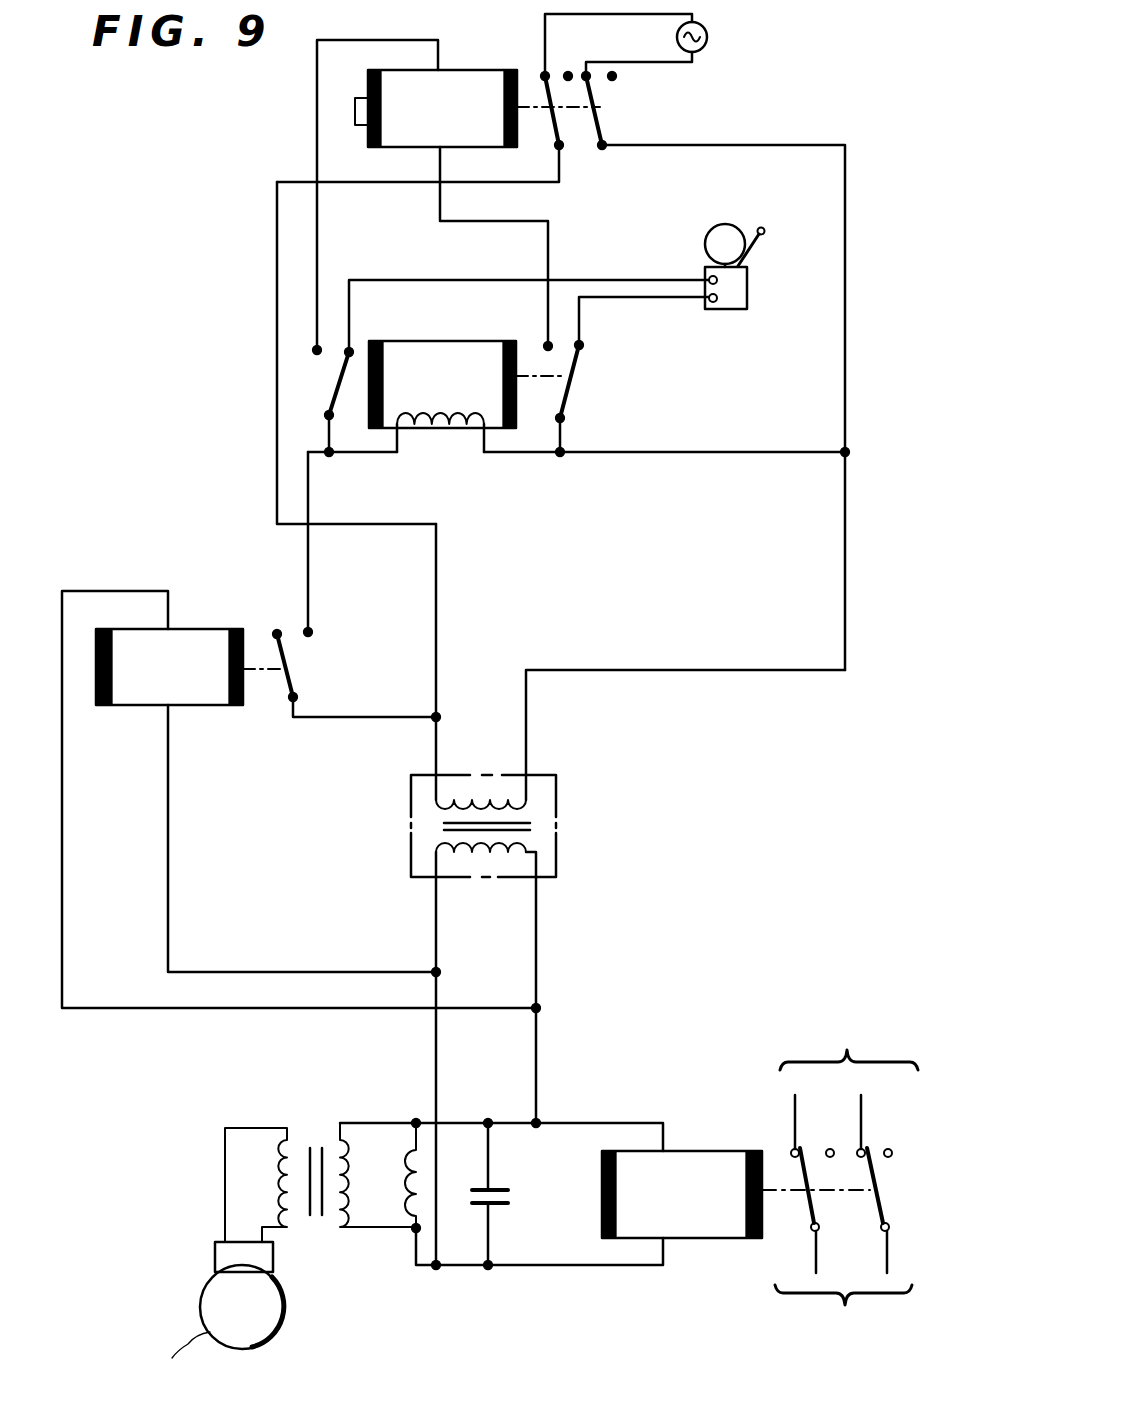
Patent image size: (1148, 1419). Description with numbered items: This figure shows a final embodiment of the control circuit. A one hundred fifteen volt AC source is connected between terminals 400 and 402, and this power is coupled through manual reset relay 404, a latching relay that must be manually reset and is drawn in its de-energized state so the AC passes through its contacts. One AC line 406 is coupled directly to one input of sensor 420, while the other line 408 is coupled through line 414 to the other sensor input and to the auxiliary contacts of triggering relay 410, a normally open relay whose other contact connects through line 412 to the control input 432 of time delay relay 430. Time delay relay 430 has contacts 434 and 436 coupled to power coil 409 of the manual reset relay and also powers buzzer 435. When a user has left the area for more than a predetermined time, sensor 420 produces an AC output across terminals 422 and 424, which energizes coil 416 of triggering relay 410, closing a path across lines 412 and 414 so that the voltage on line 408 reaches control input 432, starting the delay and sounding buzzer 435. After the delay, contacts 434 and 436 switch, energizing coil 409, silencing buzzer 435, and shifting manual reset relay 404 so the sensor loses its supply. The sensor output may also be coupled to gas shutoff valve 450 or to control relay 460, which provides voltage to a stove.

The terminal 400 is at (697, 14).
The terminal 402 is at (695, 62).
The manual reset relay 404 is at (488, 50).
The line 406 is at (847, 198).
The line 408 is at (277, 244).
The power coil 409 is at (437, 148).
The triggering relay 410 is at (217, 627).
The line 412 is at (313, 630).
The line 414 is at (436, 668).
The coil 416 is at (164, 707).
The sensor 420 is at (556, 773).
The output terminal 422 is at (436, 891).
The output terminal 424 is at (536, 879).
The time delay relay 430 is at (483, 453).
The control input 432 is at (310, 488).
The contact 434 is at (328, 360).
The buzzer 435 is at (712, 311).
The contact 436 is at (578, 386).
The gas shutoff valve 450 is at (285, 1291).
The control relay 460 is at (730, 1134).